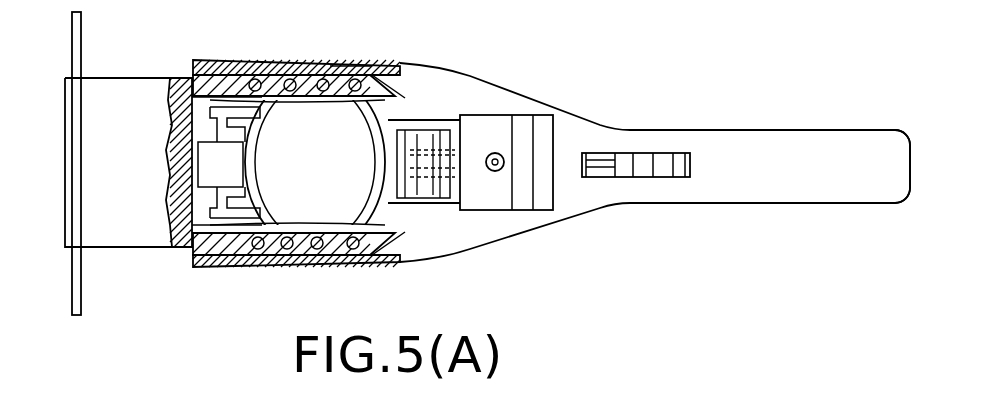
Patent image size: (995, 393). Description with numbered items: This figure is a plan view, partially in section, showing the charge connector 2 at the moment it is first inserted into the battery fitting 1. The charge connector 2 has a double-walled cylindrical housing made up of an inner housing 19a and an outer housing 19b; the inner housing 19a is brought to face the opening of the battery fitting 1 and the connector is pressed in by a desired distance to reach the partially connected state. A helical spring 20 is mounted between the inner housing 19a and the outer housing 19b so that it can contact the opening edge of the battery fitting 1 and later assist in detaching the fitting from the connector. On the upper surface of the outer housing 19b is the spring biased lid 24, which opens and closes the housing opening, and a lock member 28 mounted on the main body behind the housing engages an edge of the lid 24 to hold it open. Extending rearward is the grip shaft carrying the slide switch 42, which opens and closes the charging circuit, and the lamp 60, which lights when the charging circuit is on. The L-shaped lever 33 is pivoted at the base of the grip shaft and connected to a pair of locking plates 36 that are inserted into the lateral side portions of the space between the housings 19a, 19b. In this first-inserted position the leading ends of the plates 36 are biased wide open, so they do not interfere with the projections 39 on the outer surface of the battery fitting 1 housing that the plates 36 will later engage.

The battery fitting 1 is at (115, 225).
The charge connector 2 is at (425, 265).
The inner housing 19a is at (335, 68).
The outer housing 19b is at (360, 68).
The helical spring 20 is at (291, 262).
The spring biased lid 24 is at (365, 133).
The lock member 28 is at (505, 210).
The lever 33 is at (847, 203).
The locking plates 36 is at (288, 63).
The projections 39 is at (203, 60).
The slide switch 42 is at (645, 177).
The lamp 60 is at (497, 152).